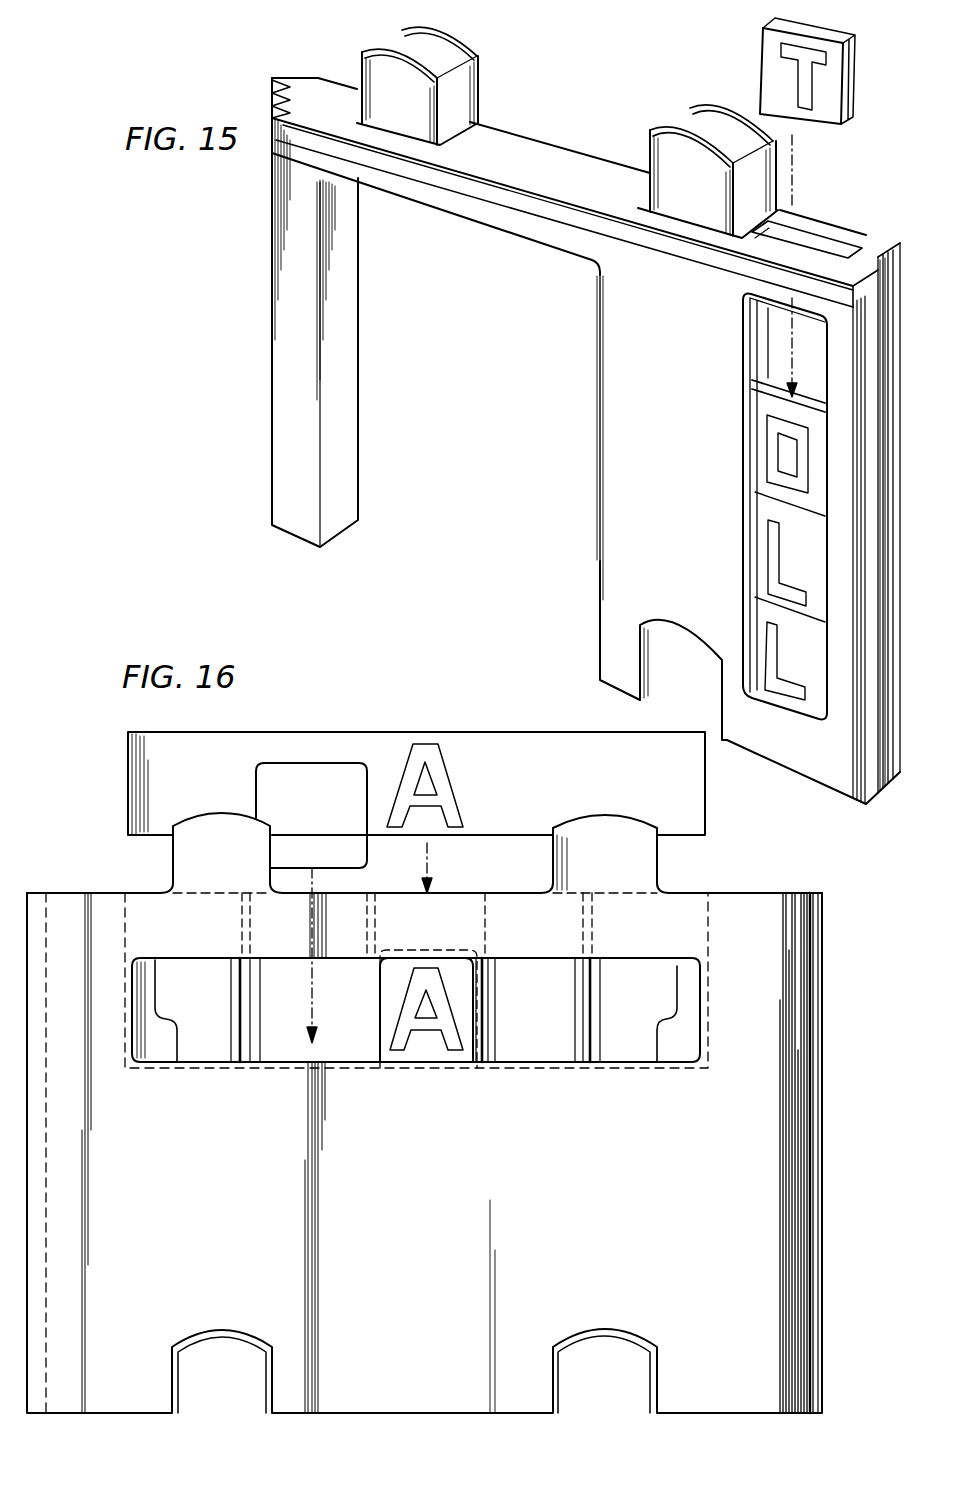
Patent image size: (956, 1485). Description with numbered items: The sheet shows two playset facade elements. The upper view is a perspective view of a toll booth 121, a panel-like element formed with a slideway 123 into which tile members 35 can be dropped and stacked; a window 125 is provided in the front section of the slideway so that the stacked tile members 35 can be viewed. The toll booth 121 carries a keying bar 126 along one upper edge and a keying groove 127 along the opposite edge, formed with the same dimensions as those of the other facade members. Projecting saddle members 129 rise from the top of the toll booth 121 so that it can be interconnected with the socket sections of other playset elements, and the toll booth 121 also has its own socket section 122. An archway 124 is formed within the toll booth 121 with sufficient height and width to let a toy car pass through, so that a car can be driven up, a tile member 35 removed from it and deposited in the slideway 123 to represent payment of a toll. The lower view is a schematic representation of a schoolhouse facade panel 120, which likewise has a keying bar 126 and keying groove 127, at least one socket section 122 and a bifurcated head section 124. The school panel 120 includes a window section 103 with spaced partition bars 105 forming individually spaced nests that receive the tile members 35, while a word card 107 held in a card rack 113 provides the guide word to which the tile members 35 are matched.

In FIG. 15, the toll booth 121 is at (246, 347).
In FIG. 15, the keying bar 126 is at (288, 72).
In FIG. 15, the saddle members 129 is at (480, 58).
In FIG. 15, the tile member 35 is at (850, 86).
In FIG. 16, the tile member 35 is at (437, 950).
In FIG. 15, the slideway 123 is at (813, 233).
In FIG. 15, the keying groove 127 is at (879, 258).
In FIG. 15, the window 125 is at (777, 355).
In FIG. 15, the archway 124 is at (480, 436).
In FIG. 15, the socket section 122 is at (693, 663).
In FIG. 16, the word card 107 is at (690, 817).
In FIG. 16, the facade panel 120 is at (823, 1099).
In FIG. 16, the window section 103 is at (289, 1036).
In FIG. 16, the card rack 113 is at (677, 1042).
In FIG. 16, the partition bars 105 is at (578, 1020).